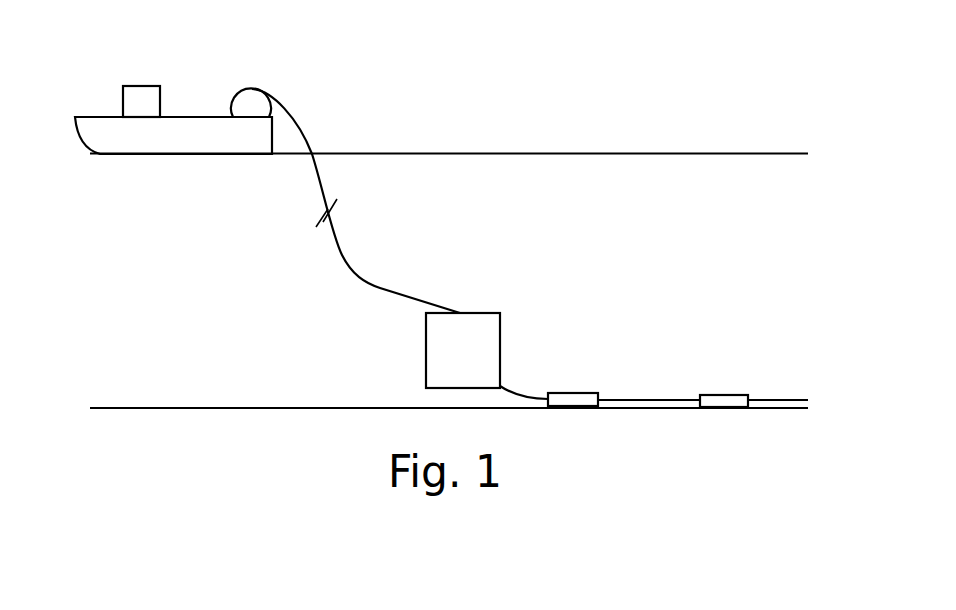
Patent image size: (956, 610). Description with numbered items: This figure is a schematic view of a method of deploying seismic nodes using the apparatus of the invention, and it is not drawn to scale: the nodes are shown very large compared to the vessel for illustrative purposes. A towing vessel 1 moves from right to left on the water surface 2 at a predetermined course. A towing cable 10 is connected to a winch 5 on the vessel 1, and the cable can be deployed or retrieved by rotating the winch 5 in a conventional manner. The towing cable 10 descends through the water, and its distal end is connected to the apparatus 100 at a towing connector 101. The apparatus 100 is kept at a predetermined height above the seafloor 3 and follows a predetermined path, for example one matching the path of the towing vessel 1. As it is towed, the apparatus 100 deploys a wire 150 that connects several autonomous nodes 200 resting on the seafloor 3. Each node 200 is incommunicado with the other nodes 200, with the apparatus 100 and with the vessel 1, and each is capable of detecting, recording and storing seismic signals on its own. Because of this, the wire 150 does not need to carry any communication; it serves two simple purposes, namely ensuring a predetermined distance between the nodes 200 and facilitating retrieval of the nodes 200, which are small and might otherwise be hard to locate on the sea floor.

The towing vessel 1 is at (178, 133).
The water surface 2 is at (603, 153).
The seafloor 3 is at (210, 408).
The winch 5 is at (253, 103).
The towing cable 10 is at (345, 257).
The apparatus 100 is at (482, 353).
The towing connector 101 is at (460, 313).
The wire 150 is at (652, 400).
The autonomous nodes 200 is at (572, 398).